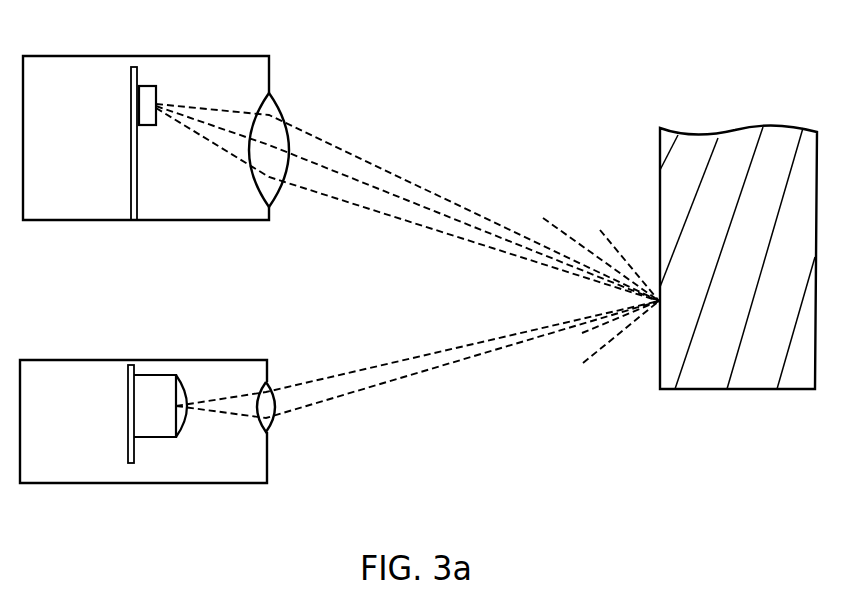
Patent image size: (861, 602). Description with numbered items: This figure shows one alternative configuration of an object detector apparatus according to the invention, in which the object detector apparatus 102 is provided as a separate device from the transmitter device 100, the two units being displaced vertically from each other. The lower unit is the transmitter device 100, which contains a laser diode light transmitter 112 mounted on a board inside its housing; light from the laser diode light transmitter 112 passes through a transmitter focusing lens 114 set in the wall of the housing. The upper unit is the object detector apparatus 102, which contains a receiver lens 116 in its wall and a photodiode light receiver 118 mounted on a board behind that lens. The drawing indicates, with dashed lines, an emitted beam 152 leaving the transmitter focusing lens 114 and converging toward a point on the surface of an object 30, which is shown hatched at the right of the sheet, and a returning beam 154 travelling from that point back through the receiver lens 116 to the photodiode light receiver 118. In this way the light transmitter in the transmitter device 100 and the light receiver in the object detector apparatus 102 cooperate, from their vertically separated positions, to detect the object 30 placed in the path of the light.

The target object / test surface 30 is at (738, 130).
The transmitter device 100 is at (228, 360).
The object detector apparatus 102 is at (230, 56).
The laser diode light transmitter 112 is at (157, 427).
The transmitter focusing lens 114 is at (272, 427).
The receiver lens 116 is at (288, 178).
The photodiode light receiver 118 is at (160, 120).
The emitted light beam 152 is at (438, 367).
The reflected light beam 154 is at (420, 206).